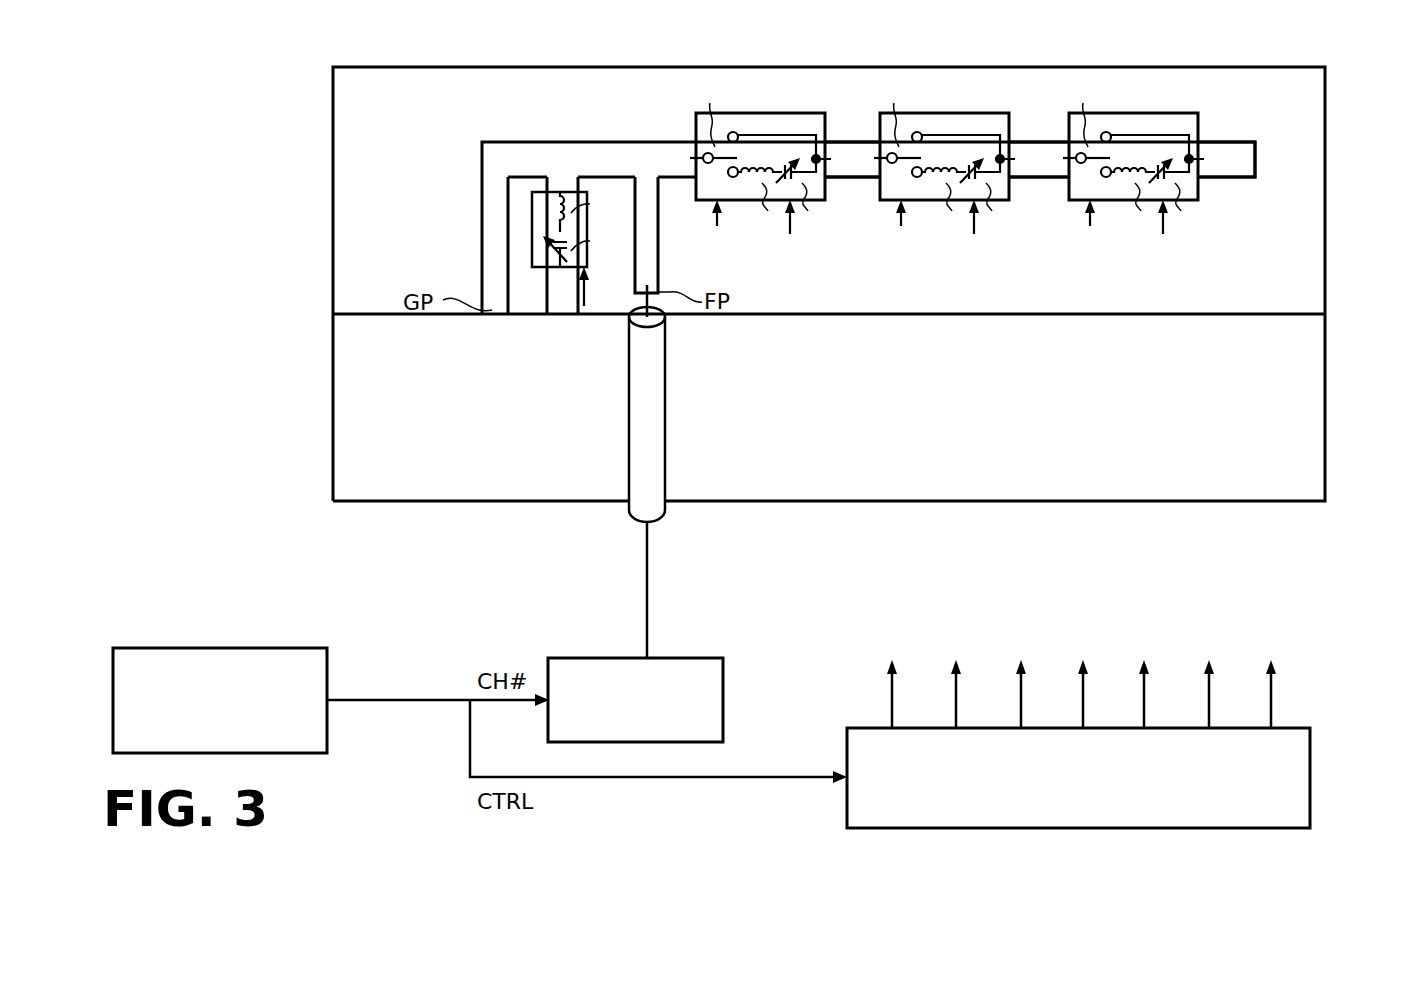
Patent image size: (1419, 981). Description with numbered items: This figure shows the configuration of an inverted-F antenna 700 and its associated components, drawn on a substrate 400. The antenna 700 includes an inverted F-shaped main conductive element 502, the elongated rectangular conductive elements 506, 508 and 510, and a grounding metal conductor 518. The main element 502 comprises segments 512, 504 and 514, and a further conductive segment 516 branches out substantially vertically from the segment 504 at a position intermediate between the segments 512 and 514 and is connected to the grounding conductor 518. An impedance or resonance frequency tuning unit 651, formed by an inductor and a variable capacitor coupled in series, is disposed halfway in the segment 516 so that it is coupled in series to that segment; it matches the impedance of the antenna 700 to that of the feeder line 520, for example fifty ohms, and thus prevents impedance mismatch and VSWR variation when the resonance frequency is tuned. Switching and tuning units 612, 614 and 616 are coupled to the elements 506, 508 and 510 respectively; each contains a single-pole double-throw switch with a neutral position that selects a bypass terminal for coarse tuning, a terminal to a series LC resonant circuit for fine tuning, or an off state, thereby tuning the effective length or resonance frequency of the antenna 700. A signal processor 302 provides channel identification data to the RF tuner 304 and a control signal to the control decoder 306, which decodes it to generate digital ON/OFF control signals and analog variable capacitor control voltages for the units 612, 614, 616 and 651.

The substrate / antenna module 400 is at (1327, 147).
The inverted F-shaped main conductive element 502 is at (494, 142).
The segment 504 is at (551, 163).
The elongated rectangular conductive element 506 is at (862, 142).
The elongated rectangular conductive element 508 is at (1047, 142).
The elongated rectangular conductive element 510 is at (1237, 142).
The segment 512 is at (490, 187).
The segment 514 is at (660, 260).
The conductive segment 516 is at (549, 283).
The grounding metal conductor 518 is at (1313, 477).
The feeder line 520 is at (657, 520).
The switching and tuning unit 612 is at (777, 113).
The switching and tuning unit 614 is at (955, 113).
The switching and tuning unit 616 is at (1143, 113).
The impedance or resonance frequency tuning unit 651 is at (532, 222).
The inverted-F antenna 700 is at (631, 112).
The signal processor 302 is at (200, 731).
The RF tuner 304 is at (656, 733).
The control decoder 306 is at (1124, 810).